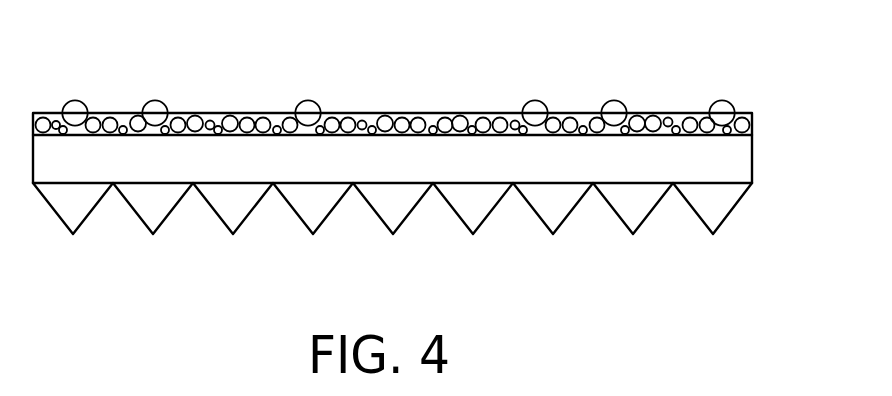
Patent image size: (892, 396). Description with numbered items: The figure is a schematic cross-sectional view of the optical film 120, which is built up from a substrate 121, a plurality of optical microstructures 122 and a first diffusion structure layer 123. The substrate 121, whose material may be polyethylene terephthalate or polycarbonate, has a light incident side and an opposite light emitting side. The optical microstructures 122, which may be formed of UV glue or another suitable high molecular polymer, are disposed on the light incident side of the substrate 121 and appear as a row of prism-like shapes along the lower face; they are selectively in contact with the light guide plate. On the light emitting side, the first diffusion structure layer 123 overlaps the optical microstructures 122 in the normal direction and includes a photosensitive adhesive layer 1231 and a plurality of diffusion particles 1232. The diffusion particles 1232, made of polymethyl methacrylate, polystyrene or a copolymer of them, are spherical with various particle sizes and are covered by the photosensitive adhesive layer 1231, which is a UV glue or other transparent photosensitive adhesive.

The optical film 120 is at (425, 156).
The substrate 121 is at (723, 160).
The optical microstructures 122 is at (703, 202).
The first diffusion structure layer 123 is at (392, 67).
The photosensitive adhesive layer 1231 is at (583, 118).
The diffusion particles 1232 is at (667, 122).